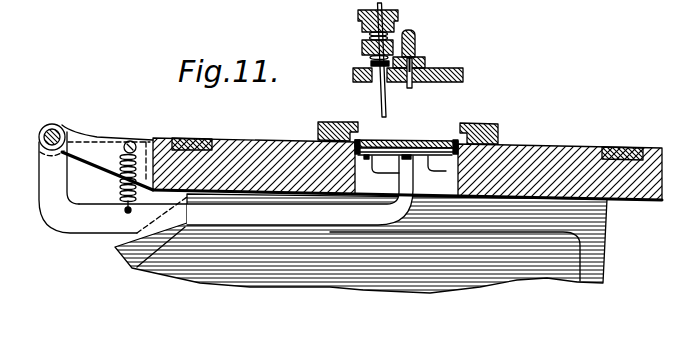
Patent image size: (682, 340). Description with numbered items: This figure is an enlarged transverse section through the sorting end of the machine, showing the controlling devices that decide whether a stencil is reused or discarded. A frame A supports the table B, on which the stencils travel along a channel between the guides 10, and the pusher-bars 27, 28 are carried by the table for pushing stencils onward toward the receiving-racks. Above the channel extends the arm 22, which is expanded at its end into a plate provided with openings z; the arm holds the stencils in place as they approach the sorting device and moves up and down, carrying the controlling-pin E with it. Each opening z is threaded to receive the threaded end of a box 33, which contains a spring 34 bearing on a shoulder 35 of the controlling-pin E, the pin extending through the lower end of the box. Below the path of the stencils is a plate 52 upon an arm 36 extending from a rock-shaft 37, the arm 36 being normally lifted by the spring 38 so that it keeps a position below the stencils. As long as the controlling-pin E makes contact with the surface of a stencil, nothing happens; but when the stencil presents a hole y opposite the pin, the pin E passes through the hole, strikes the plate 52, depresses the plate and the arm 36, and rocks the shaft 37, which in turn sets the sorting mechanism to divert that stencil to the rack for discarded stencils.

The frame A is at (495, 277).
The table B is at (407, 157).
The controlling-pin E is at (397, 60).
The opening Z is at (377, 80).
The hole y is at (430, 137).
The guides 10 is at (318, 132).
The arm 22 is at (414, 44).
The pusher-bar 27 is at (624, 152).
The pusher-bar 28 is at (200, 132).
The box 33 is at (397, 24).
The spring 34 is at (362, 45).
The shoulder 35 is at (371, 63).
The arm 36 is at (218, 170).
The rock-shaft 37 is at (49, 128).
The spring 38 is at (120, 184).
The plate 52 is at (405, 172).